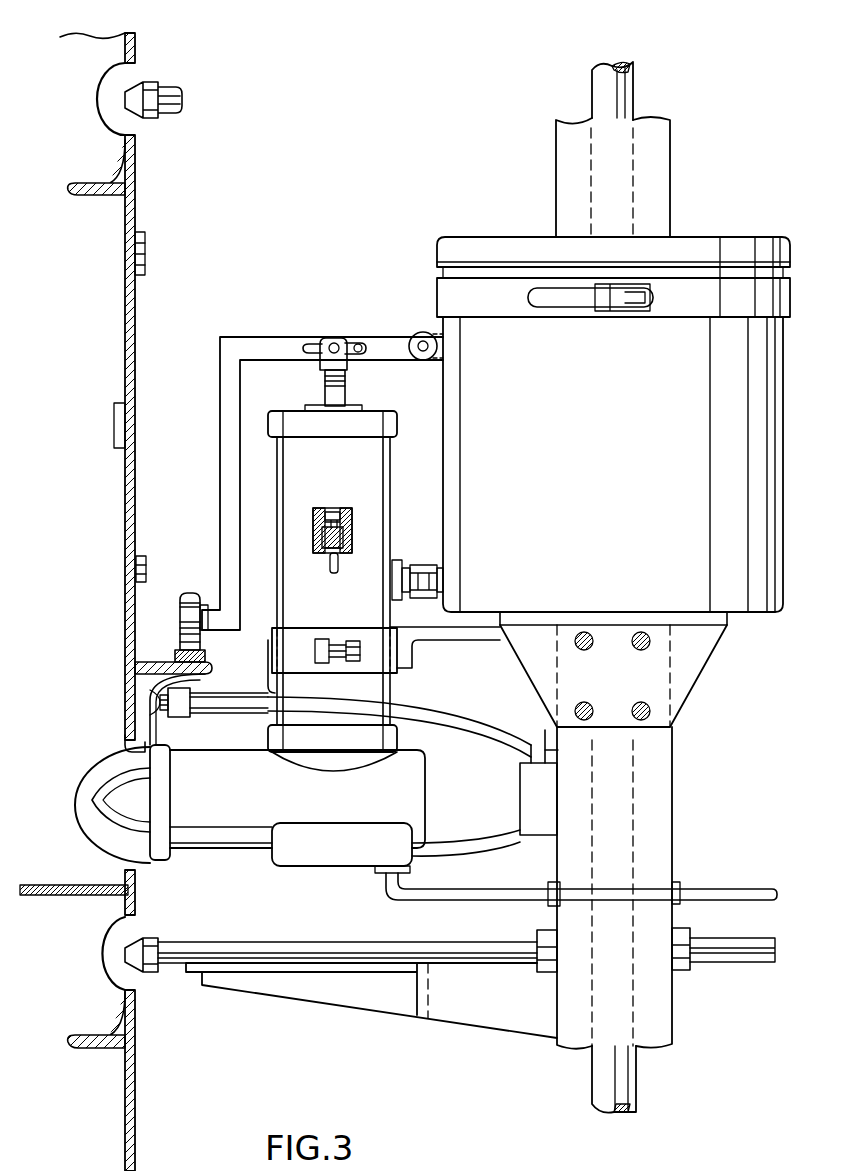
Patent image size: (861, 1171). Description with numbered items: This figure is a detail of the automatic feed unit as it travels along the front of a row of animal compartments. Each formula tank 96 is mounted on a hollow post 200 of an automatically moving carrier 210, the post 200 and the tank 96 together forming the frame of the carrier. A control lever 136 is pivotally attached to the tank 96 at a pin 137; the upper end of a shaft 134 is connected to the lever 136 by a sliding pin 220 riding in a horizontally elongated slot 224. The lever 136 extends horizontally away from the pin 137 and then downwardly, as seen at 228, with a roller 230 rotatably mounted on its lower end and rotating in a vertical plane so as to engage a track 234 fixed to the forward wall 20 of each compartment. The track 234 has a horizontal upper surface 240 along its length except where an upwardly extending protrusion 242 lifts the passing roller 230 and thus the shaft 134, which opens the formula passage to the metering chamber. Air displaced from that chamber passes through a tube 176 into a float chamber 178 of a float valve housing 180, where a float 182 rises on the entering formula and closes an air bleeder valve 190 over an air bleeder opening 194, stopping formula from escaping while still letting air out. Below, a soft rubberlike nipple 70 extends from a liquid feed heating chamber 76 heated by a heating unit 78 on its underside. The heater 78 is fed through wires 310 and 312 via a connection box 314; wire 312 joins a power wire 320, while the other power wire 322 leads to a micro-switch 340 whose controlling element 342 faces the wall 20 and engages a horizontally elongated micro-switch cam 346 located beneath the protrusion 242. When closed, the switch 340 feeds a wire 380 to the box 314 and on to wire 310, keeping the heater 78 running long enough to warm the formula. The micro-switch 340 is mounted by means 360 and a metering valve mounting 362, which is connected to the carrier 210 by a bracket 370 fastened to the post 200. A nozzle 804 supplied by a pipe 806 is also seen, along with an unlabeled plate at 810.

The forward wall 20 is at (128, 674).
The nipple 70 is at (100, 803).
The liquid feed heating chamber 76 is at (212, 858).
The heating unit 78 is at (333, 863).
The formula tank 96 is at (758, 614).
The shaft 134 is at (325, 388).
The control lever 136 is at (210, 416).
The pivot pin 137 is at (420, 334).
The tube 176 is at (335, 574).
The float chamber 178 is at (352, 522).
The float valve housing 180 is at (352, 541).
The float 182 is at (320, 538).
The air bleeder valve 190 is at (352, 509).
The air bleeder opening 194 is at (326, 508).
The hollow post 200 is at (675, 786).
The automatically moving carrier 210 is at (676, 745).
The sliding pin 220 is at (334, 343).
The horizontally elongated slot 224 is at (358, 343).
The downwardly extending portion of lever 228 is at (220, 480).
The roller 230 is at (190, 592).
The track 234 is at (138, 689).
The horizontal upper surface 240 is at (206, 666).
The upwardly extending protrusion 242 is at (175, 652).
The wire 310 is at (445, 845).
The wire 312 is at (465, 855).
The connection box 314 is at (520, 792).
The power wire 320 is at (558, 750).
The power wire 322 is at (529, 745).
The micro-switch 340 is at (191, 714).
The controlling element 342 is at (145, 710).
The micro-switch cam 346 is at (152, 703).
The mounting means 360 is at (274, 686).
The metering valve mounting 362 is at (289, 630).
The bracket 370 is at (445, 630).
The wire 380 is at (470, 730).
The nozzle 804 is at (153, 948).
The pipe 806 is at (405, 941).
The plate 810 is at (358, 996).